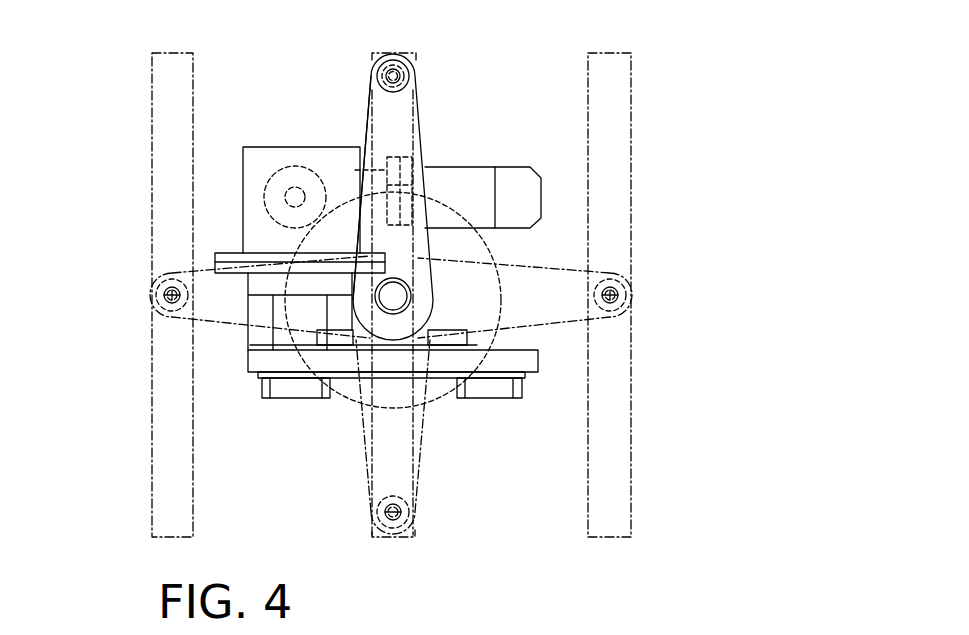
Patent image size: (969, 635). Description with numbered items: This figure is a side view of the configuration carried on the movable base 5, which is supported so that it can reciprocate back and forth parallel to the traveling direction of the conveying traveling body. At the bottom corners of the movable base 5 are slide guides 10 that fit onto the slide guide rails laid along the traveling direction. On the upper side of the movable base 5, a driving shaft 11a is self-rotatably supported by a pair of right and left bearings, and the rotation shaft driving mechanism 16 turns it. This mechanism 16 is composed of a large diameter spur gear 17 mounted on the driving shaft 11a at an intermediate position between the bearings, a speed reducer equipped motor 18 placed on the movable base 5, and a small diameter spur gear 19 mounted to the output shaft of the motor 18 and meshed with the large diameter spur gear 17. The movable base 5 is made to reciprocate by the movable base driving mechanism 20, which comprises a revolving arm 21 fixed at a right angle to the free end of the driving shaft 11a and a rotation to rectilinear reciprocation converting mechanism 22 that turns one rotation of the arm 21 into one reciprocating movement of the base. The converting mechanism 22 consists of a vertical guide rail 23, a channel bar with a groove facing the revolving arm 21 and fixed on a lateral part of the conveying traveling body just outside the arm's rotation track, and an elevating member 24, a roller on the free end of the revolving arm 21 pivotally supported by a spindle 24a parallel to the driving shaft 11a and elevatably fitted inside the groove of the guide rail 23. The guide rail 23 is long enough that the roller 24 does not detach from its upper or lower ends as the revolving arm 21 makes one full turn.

The movable base 5 is at (548, 363).
The slide guides 10 is at (300, 398).
The driving shaft 11a is at (386, 292).
The rotation shaft driving mechanism 16 is at (263, 148).
The large diameter spur gear 17 is at (493, 293).
The speed reducer equipped motor 18 is at (511, 183).
The small diameter spur gear 19 is at (298, 178).
The movable base driving mechanism 20 is at (395, 53).
The revolving arm 21 is at (403, 140).
The rotation to rectilinear reciprocation converting mechanism 22 is at (372, 115).
The guide rail 23 is at (163, 152).
The elevating member 24 is at (411, 78).
The spindle 24a is at (388, 70).